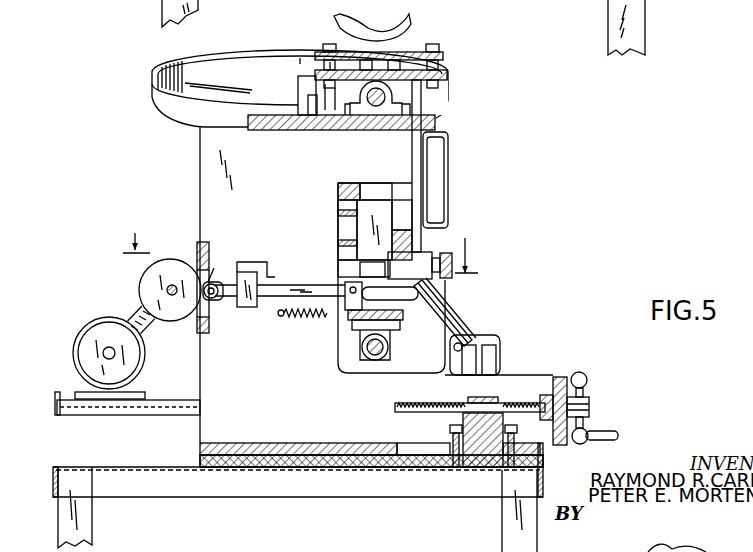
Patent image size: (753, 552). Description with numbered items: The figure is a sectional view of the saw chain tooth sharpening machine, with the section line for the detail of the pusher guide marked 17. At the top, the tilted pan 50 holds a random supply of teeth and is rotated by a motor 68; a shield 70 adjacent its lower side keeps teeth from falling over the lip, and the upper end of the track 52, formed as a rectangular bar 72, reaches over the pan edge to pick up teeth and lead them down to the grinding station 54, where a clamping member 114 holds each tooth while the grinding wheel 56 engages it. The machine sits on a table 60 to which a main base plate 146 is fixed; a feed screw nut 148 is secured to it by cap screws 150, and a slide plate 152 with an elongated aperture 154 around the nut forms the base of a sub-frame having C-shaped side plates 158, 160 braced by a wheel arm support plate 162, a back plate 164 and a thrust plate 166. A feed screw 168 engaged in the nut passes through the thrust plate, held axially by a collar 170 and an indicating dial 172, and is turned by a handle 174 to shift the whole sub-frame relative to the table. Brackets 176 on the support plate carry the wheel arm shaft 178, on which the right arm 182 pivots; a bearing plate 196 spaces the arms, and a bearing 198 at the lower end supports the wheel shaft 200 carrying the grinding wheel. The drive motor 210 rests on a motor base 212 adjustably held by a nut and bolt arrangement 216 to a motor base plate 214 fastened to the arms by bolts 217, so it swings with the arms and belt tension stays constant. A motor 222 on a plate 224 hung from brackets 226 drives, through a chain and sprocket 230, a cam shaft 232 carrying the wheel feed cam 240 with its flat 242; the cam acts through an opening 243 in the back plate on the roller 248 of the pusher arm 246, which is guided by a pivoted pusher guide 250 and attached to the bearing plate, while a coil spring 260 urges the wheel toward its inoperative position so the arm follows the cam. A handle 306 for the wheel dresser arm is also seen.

The pan 50 is at (291, 56).
The table 60 is at (218, 468).
The shield 70 is at (300, 83).
The rectangular bar 72 is at (212, 90).
The left side plate 158 is at (215, 153).
The right hand side plate 160 is at (286, 228).
The wheel arm support plate 162 is at (285, 132).
The back plate 164 is at (211, 262).
The thrust plate 166 is at (558, 378).
The feed screw 168 is at (395, 407).
The collar 170 is at (547, 428).
The indicating dial 172 is at (583, 374).
The handle 174 is at (587, 396).
The brackets 176 is at (368, 110).
The wheel arm shaft 178 is at (378, 106).
The right arm 182 is at (342, 256).
The bearing plate 196 is at (400, 318).
The bearing 198 is at (388, 352).
The wheel shaft 200 is at (385, 347).
The motor 210 is at (374, 23).
The motor base 212 is at (446, 57).
The motor base plate 214 is at (449, 75).
The nut and bolt arrangement 216 is at (437, 50).
The bolts 217 is at (388, 60).
The motor 222 is at (132, 374).
The plate 224 is at (55, 402).
The brackets 226 is at (143, 412).
The chain and sprocket 230 is at (133, 310).
The cam shaft 232 is at (174, 296).
The wheel feed cam 240 is at (188, 256).
The flat 242 is at (214, 268).
The opening 243 is at (268, 262).
The pusher arm 246 is at (272, 297).
The cam engaging roller 248 is at (213, 318).
The pusher guide 250 is at (253, 308).
The coil spring 260 is at (320, 318).
The handle 306 is at (452, 266).
The track 52 is at (455, 292).
The grinding station 54 is at (510, 355).
The grinding wheel 56 is at (421, 312).
The motor 68 is at (438, 163).
The clamping member 114 is at (485, 337).
The main base plate 146 is at (298, 470).
The feed screw nut 148 is at (500, 397).
The cap screws 150 is at (450, 472).
The slide plate 152 is at (350, 443).
The elongated aperture 154 is at (420, 443).
The section line 17- 17 is at (300, 243).